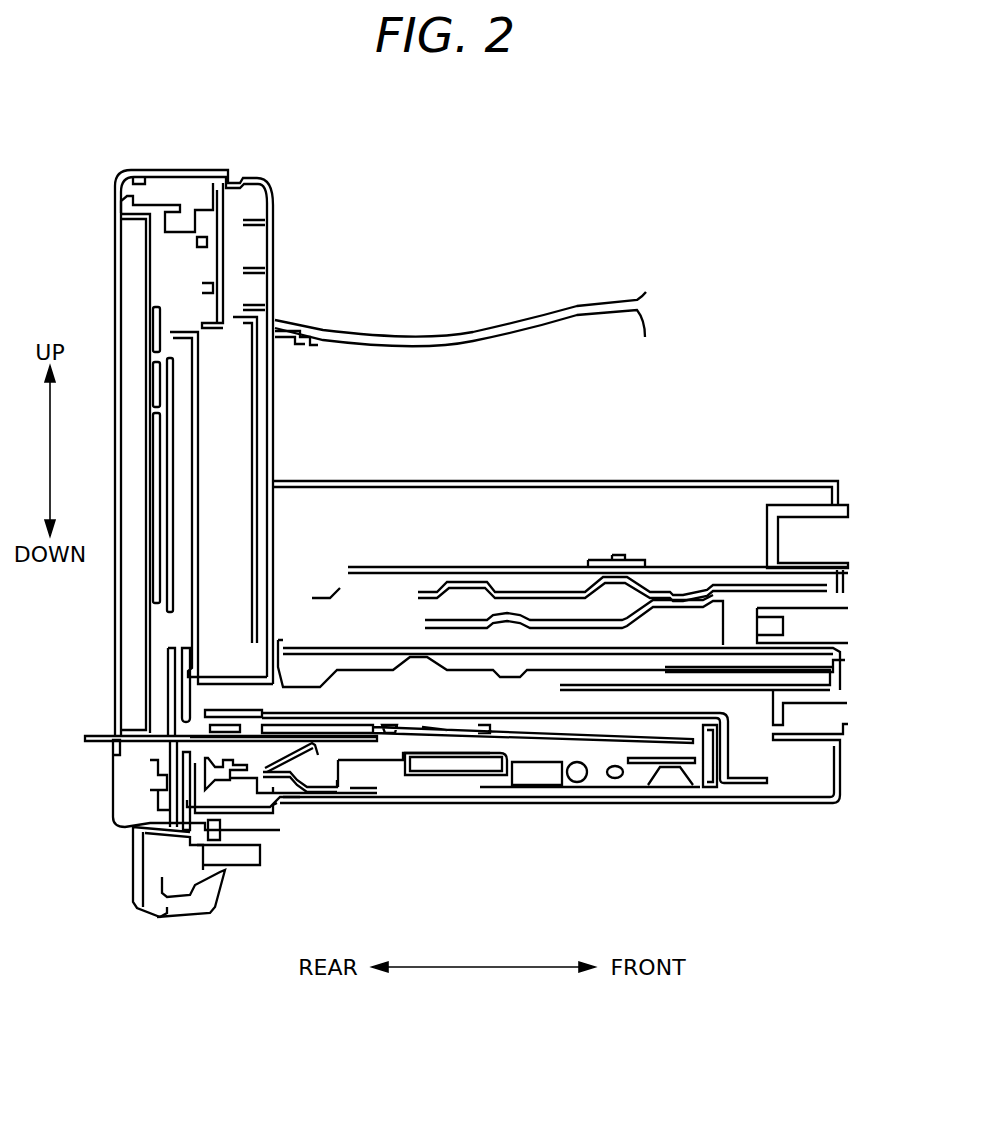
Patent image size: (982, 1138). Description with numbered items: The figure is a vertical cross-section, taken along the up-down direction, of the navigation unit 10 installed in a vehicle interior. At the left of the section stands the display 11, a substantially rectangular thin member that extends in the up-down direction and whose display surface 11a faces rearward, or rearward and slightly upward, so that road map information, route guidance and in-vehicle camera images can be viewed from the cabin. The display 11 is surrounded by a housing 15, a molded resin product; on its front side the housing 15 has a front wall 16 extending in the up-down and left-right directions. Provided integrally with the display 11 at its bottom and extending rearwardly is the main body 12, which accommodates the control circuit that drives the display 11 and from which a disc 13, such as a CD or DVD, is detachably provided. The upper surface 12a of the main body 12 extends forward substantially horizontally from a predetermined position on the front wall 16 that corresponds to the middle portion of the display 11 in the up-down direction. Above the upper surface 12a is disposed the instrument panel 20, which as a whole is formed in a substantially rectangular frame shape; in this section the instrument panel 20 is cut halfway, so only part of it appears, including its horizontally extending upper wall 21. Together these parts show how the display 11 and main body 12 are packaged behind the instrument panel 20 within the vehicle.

The navigation unit 10 is at (768, 324).
The display 11 is at (172, 172).
The display surface 11a is at (112, 246).
The main body 12 is at (555, 805).
The upper surface 12a is at (537, 481).
The disc 13 is at (93, 734).
The housing 15 is at (254, 177).
The front wall 16 is at (275, 414).
The instrument panel 20 is at (577, 306).
The upper wall 21 is at (470, 330).